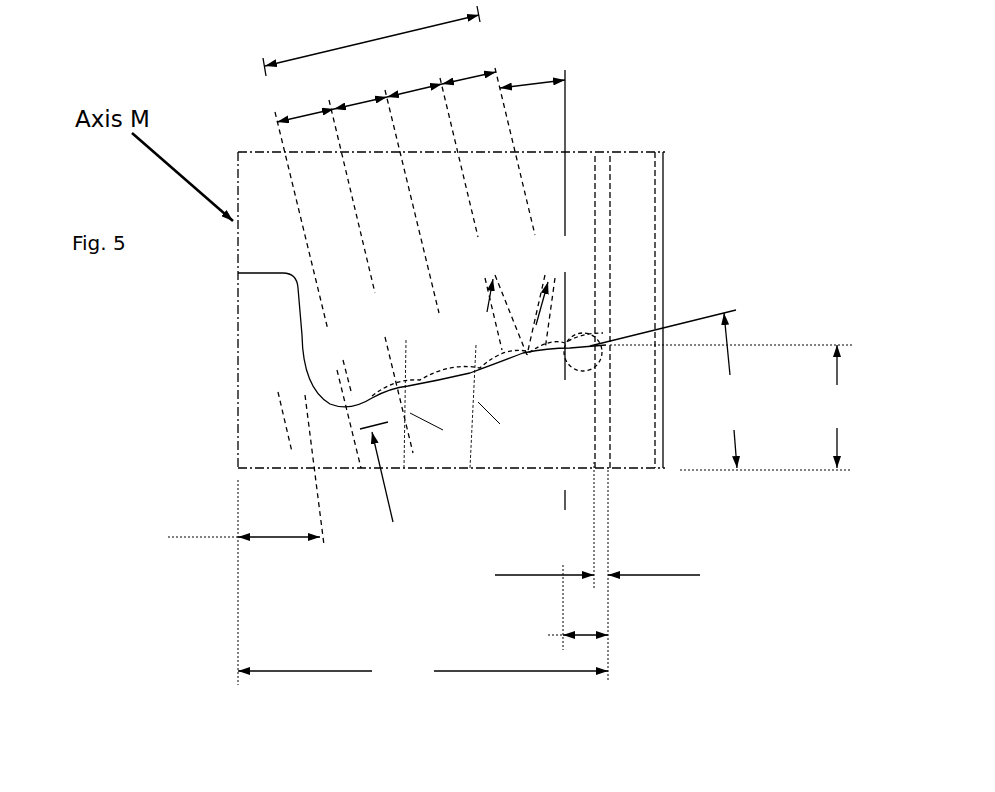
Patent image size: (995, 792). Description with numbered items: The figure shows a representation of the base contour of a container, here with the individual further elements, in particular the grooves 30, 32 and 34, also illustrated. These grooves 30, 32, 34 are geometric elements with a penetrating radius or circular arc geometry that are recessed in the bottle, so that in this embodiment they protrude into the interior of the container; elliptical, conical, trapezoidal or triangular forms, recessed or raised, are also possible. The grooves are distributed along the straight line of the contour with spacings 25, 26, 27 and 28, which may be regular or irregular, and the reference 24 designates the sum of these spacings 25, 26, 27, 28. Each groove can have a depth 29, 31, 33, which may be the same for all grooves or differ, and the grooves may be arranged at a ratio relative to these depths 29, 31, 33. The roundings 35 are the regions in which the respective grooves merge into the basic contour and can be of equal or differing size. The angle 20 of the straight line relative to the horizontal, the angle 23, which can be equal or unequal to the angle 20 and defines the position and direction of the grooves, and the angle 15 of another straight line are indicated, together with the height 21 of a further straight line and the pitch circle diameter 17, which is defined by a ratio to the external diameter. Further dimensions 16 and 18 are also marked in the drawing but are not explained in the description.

The angle of the straight line 15 is at (244, 511).
The width of end portion 16 is at (551, 621).
The pitch circle diameter 17 is at (423, 672).
The width of groove 18 is at (597, 550).
The angle of the straight line 20 is at (730, 390).
The height of the straight line 21 is at (836, 406).
The angle 23 is at (532, 57).
The sum of the spacings 24 is at (371, 40).
The spacing 25 is at (303, 102).
The spacing 26 is at (360, 87).
The spacing 27 is at (414, 74).
The spacing 28 is at (469, 61).
The depth 29 is at (361, 393).
The groove 30 is at (400, 384).
The depth 31 is at (459, 393).
The groove 32 is at (407, 472).
The depth 33 is at (506, 299).
The groove 34 is at (544, 300).
The roundings 35 is at (480, 386).